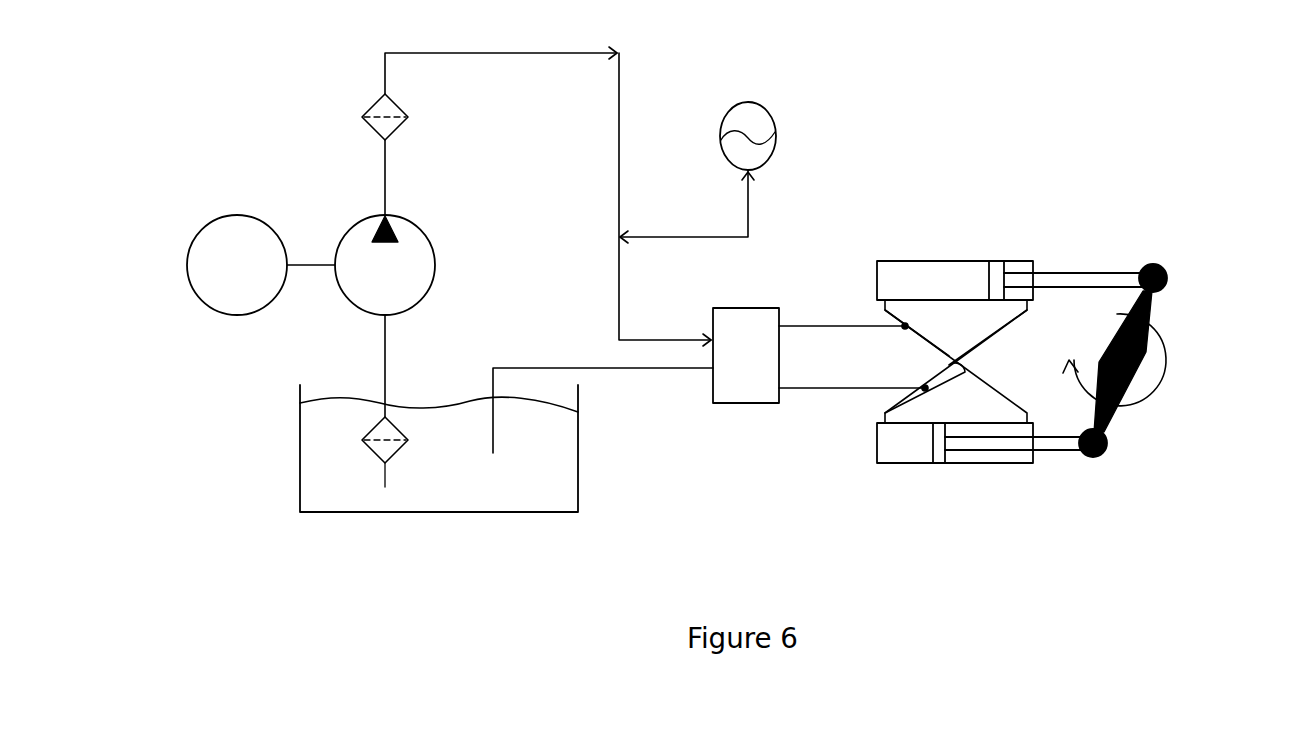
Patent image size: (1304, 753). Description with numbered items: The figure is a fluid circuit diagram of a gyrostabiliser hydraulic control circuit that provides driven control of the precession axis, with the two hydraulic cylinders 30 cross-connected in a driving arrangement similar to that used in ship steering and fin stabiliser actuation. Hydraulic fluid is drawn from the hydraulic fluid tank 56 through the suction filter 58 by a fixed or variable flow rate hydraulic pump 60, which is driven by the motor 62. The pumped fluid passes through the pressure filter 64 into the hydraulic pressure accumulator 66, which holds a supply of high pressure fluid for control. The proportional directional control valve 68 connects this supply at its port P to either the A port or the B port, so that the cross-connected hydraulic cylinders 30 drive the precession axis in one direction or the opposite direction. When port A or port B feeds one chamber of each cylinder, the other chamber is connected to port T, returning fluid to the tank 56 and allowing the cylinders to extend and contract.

The hydraulic cylinders 30 is at (1053, 264).
The hydraulic fluid tank 56 is at (562, 465).
The suction filter 58 is at (378, 455).
The hydraulic pump 60 is at (428, 262).
The motor 62 is at (232, 230).
The pressure filter 64 is at (378, 100).
The hydraulic pressure accumulator 66 is at (768, 125).
The proportional directional control valve 68 is at (740, 317).